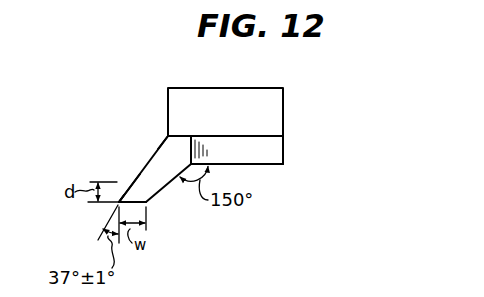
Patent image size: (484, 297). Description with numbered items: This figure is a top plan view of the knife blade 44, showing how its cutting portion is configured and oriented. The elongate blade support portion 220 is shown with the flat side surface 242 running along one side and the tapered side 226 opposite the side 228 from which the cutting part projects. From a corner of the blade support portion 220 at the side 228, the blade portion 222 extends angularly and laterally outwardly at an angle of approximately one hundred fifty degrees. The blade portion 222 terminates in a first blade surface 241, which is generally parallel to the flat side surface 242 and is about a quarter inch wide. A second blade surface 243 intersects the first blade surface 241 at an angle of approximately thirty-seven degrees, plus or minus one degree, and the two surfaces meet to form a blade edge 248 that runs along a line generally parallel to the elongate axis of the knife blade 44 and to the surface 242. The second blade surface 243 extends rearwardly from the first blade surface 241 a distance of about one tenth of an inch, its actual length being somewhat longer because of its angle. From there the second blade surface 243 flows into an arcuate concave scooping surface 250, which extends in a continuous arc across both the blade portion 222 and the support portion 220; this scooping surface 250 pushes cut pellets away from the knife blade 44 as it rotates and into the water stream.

The knife blade 44 is at (300, 111).
The side 228 is at (164, 144).
The arcuate concave scooping surface 250 is at (152, 157).
The second blade surface 243 is at (128, 188).
The blade edge 248 is at (118, 204).
The first blade surface 241 is at (147, 204).
The blade portion 222 is at (164, 185).
The blade support portion 220 is at (253, 162).
The flat side surface 242 is at (273, 164).
The side 226 is at (273, 147).